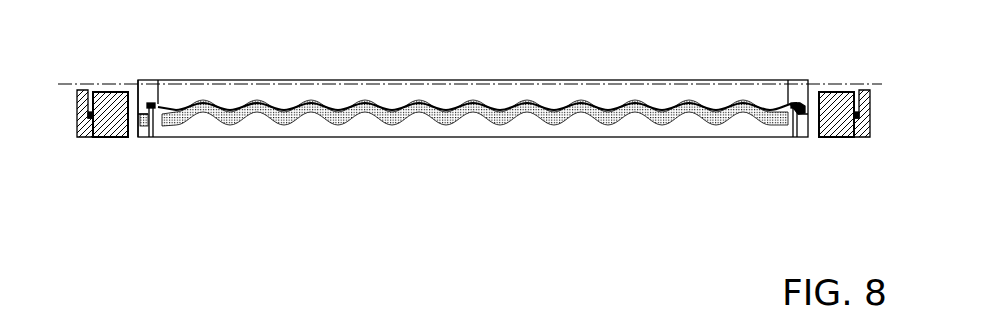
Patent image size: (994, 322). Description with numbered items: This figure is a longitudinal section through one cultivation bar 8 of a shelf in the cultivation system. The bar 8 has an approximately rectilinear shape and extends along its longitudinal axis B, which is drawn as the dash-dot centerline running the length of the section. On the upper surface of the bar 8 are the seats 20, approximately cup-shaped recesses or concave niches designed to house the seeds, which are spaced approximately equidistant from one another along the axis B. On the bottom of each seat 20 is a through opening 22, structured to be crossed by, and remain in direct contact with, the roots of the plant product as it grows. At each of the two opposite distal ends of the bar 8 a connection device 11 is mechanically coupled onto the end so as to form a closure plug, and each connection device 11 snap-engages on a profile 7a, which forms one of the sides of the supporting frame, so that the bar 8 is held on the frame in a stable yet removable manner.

The cultivation bar 8 is at (430, 91).
The seat 20 is at (243, 96).
The through opening 22 is at (553, 116).
The profile 7a is at (94, 135).
The connection device 11 is at (84, 84).
The longitudinal axis B is at (138, 80).